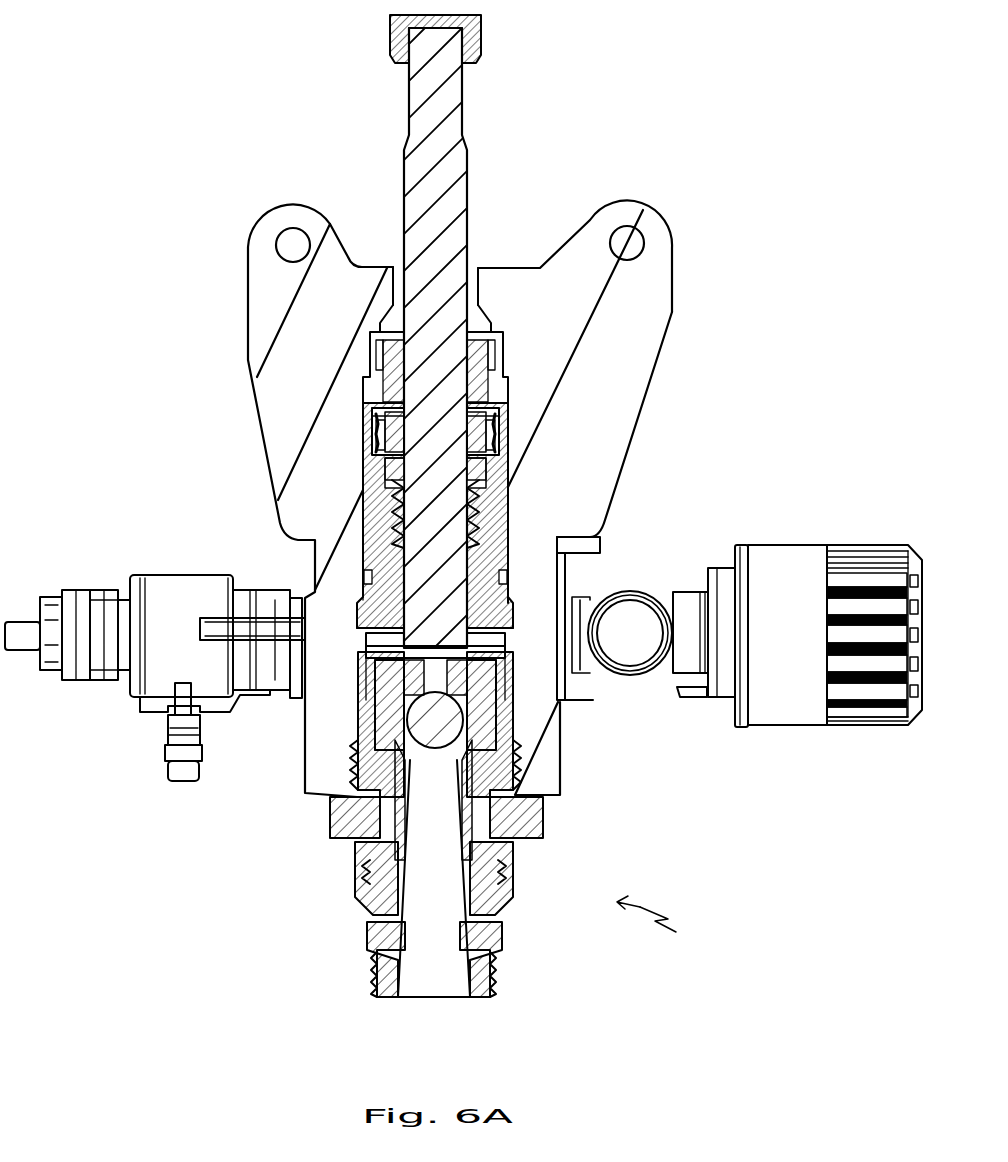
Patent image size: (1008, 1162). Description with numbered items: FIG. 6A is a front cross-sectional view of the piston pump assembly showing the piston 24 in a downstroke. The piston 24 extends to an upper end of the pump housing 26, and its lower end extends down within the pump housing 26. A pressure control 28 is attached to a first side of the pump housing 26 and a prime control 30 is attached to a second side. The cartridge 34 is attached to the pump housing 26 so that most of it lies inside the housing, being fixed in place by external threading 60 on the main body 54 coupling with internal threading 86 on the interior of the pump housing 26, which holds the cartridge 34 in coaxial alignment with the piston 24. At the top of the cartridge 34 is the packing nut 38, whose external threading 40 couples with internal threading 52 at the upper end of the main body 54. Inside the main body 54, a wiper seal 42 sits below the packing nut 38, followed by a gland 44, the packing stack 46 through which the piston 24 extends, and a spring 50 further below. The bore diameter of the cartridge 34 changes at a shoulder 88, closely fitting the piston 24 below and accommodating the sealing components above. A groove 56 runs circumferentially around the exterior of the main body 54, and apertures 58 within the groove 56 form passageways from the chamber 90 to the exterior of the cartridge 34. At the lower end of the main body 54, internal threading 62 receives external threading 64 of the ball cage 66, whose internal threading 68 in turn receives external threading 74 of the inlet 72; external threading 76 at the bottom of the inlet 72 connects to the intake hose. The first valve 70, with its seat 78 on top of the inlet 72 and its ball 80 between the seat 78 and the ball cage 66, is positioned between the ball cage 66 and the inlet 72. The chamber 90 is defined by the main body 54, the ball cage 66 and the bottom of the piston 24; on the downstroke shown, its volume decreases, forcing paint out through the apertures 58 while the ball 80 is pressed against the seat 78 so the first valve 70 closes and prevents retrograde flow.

The piston 24 is at (455, 164).
The pump housing 26 is at (517, 745).
The pressure control 28 is at (782, 565).
The prime control 30 is at (145, 590).
The cartridge 34 is at (661, 922).
The packing nut 38 is at (495, 382).
The external threading 40 is at (380, 432).
The wiper seal 42 is at (375, 410).
The gland 44 is at (484, 468).
The packing stack 46 is at (483, 492).
The spring 50 is at (385, 540).
The internal threading 52 is at (372, 422).
The main body 54 is at (505, 428).
The groove 56 is at (355, 660).
The apertures 58 is at (360, 633).
The external threading 60 is at (510, 800).
The internal threading 62 is at (530, 815).
The external threading 64 is at (520, 838).
The ball cage 66 is at (500, 870).
The internal threading 68 is at (505, 890).
The first valve 70 is at (395, 850).
The inlet 72 is at (557, 542).
The external threading 74 is at (508, 900).
The external threading 76 is at (492, 985).
The seat 78 is at (405, 860).
The ball 80 is at (427, 740).
The internal threading 86 is at (515, 760).
The shoulder 88 is at (372, 572).
The chamber 90 is at (585, 700).